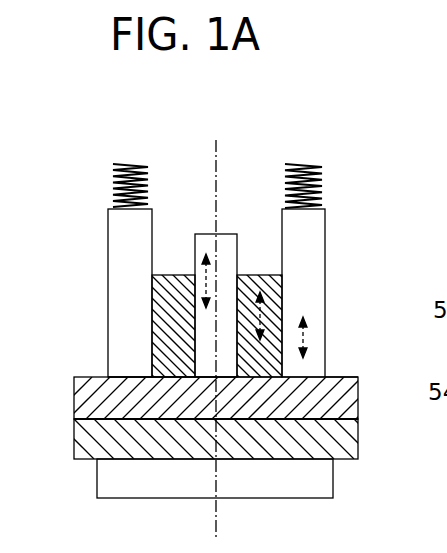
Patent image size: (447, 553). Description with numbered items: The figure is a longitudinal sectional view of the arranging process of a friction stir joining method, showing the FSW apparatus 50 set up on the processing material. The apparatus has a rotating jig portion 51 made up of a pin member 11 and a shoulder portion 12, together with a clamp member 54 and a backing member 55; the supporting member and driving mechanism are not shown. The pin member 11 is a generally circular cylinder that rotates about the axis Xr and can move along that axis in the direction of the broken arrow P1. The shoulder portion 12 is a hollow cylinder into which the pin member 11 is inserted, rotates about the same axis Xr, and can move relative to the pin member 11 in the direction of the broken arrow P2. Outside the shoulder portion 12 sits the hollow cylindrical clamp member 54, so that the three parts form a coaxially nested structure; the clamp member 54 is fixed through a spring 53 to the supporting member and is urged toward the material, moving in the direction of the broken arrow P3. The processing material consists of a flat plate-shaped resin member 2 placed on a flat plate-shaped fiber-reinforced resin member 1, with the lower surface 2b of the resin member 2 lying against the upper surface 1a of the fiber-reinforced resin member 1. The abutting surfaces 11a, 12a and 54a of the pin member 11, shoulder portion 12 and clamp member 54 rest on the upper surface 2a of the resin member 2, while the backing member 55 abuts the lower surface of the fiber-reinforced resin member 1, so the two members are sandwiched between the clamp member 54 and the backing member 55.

The fiber-reinforced resin member 1 is at (346, 440).
The upper surface of the fiber-reinforced resin member 1a is at (334, 417).
The resin member 2 is at (340, 396).
The upper surface of the resin member 2a is at (356, 375).
The lower surface of the resin member 2b is at (338, 421).
The pin member 11 is at (203, 329).
The abutting surface of the pin member 11a is at (205, 378).
The shoulder portion 12 is at (160, 290).
The abutting surface of the shoulder portion 12a is at (175, 382).
The FSW apparatus 50 is at (308, 129).
The rotating jig portion 51 is at (58, 278).
The spring 53 is at (113, 183).
The clamp member 54 is at (113, 231).
The abutting surface of the clamp member 54a is at (133, 378).
The backing member 55 is at (107, 483).
The direction of movement of the pin member P1 is at (198, 273).
The direction of movement of the shoulder portion P2 is at (270, 310).
The direction of movement of the clamp member P3 is at (313, 346).
The rotational axis Xr is at (230, 142).